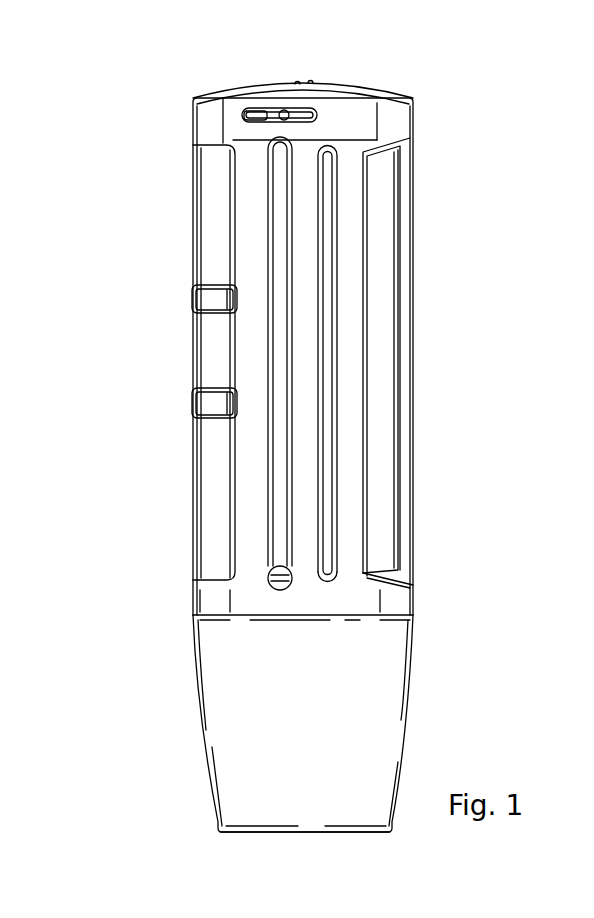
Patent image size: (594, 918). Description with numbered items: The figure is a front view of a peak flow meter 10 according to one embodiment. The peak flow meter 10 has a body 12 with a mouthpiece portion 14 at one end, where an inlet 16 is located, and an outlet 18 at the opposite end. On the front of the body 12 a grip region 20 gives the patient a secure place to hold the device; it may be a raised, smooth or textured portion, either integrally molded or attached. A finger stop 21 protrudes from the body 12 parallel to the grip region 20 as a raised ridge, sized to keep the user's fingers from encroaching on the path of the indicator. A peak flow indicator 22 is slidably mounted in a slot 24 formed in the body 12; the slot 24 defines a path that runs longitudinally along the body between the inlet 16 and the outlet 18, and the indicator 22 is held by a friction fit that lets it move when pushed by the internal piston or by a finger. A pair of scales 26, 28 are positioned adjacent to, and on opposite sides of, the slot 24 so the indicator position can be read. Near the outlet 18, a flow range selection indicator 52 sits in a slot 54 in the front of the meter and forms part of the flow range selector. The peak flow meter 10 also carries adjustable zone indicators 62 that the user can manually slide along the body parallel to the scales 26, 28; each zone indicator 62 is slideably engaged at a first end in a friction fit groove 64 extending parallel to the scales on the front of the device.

The peak flow meter 10 is at (470, 104).
The body 12 is at (363, 598).
The mouthpiece portion 14 is at (250, 782).
The inlet 16 is at (348, 848).
The outlet 18 is at (262, 80).
The grip region 20 is at (385, 285).
The finger stop 21 is at (329, 382).
The peak flow indicator 22 is at (273, 572).
The slot 24 is at (280, 545).
The scale 26 is at (226, 122).
The scale 28 is at (318, 172).
The flow range selection indicator 52 is at (246, 112).
The slot 54 is at (288, 117).
The adjustable zone indicators 62 is at (210, 298).
The friction fit groove 64 is at (232, 268).